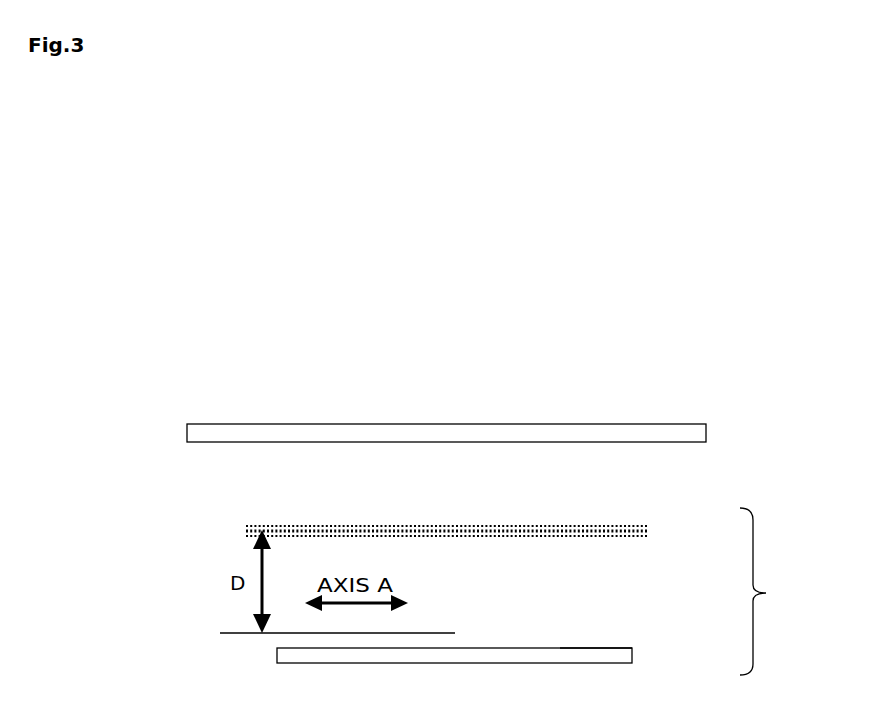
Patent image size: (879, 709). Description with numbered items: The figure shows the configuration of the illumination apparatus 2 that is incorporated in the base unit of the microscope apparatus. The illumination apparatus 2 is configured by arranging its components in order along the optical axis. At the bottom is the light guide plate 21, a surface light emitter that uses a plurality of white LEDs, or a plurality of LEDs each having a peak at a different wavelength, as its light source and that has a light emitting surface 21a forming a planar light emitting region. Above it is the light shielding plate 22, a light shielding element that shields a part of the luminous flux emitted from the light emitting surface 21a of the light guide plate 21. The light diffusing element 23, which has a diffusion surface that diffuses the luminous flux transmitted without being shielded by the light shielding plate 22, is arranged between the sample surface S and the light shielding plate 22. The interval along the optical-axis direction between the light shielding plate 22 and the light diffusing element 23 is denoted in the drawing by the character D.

The sample surface S is at (706, 432).
The illumination apparatus 2 is at (766, 591).
The light diffusing element 23 is at (647, 529).
The light shielding plate 22 is at (220, 633).
The light guide plate 21 is at (632, 655).
The light emitting surface 21a is at (595, 648).